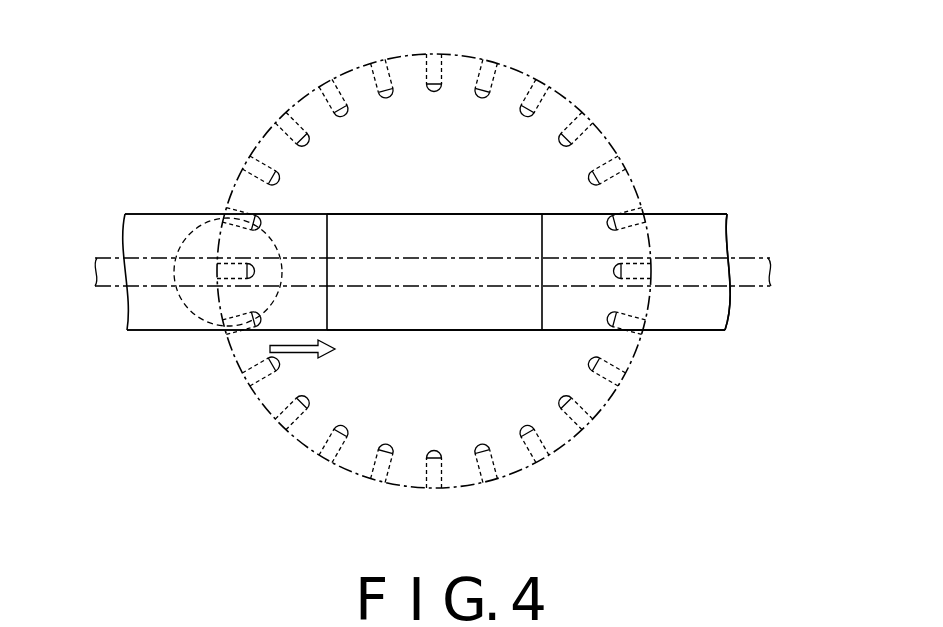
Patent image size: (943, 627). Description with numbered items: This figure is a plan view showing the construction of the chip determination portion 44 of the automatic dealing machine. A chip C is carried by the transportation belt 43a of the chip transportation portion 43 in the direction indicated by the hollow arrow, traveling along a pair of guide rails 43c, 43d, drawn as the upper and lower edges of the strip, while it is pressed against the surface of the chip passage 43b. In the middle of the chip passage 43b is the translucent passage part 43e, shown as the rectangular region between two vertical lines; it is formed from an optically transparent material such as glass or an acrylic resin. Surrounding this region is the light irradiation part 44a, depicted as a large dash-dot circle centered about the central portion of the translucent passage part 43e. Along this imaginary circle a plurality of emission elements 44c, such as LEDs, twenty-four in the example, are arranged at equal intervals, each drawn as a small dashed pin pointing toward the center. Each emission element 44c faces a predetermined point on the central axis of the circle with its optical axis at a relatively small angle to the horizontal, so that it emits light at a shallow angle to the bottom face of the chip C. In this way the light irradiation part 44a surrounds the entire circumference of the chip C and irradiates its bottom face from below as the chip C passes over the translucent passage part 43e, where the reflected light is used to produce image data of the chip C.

The chip transportation portion 43 is at (100, 307).
The transportation belt 43a is at (80, 258).
The chip passage 43b is at (690, 228).
The guide rail 43c is at (150, 212).
The guide rail 43d is at (162, 331).
The translucent passage part 43e is at (447, 332).
The chip determination portion 44 is at (441, 248).
The light irradiation part 44a is at (572, 100).
The emission element 44c is at (495, 62).
The chip C is at (200, 240).